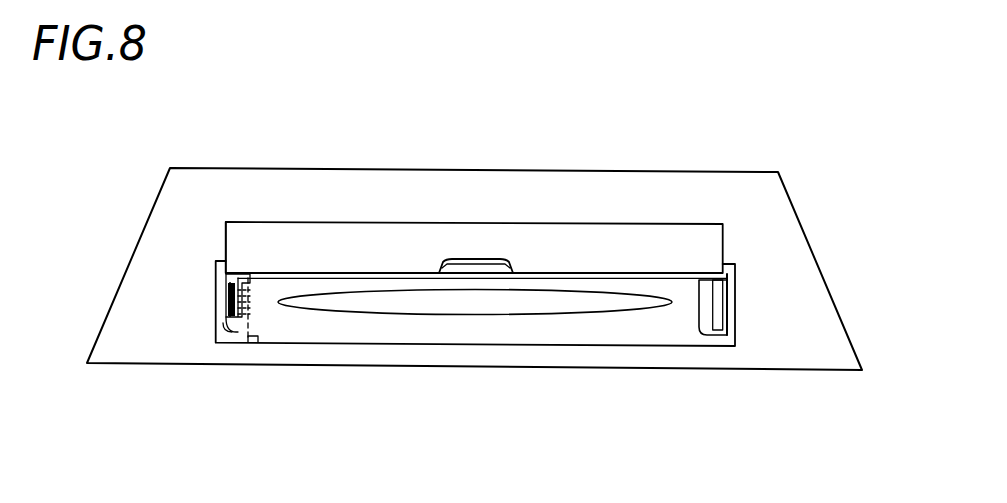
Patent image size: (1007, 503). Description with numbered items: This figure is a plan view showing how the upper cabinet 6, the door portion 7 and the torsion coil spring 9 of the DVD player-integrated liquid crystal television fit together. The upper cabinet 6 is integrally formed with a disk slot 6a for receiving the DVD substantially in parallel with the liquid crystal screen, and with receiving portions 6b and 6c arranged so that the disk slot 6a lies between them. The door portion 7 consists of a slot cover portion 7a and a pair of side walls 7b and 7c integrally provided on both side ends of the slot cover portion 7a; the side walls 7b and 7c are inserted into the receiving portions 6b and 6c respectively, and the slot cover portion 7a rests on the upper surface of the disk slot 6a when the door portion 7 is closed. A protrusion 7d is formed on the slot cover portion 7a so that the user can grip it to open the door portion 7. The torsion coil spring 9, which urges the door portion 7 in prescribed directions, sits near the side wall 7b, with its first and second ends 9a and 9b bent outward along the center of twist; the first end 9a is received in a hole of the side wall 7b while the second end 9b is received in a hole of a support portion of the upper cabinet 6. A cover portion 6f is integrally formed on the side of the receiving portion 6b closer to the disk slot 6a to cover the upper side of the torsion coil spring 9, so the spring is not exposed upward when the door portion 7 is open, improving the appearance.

The upper cabinet 6 is at (775, 195).
The disk slot 6a is at (420, 314).
The receiving portion 6b is at (232, 334).
The receiving portion 6c is at (707, 335).
The cover portion 6f is at (242, 296).
The door portion 7 is at (651, 232).
The slot cover portion 7a is at (376, 240).
The side wall 7b is at (237, 316).
The side wall 7c is at (718, 330).
The protrusion 7d is at (479, 259).
The torsion coil spring 9 is at (252, 308).
The first end 9a is at (215, 283).
The second end 9b is at (256, 343).